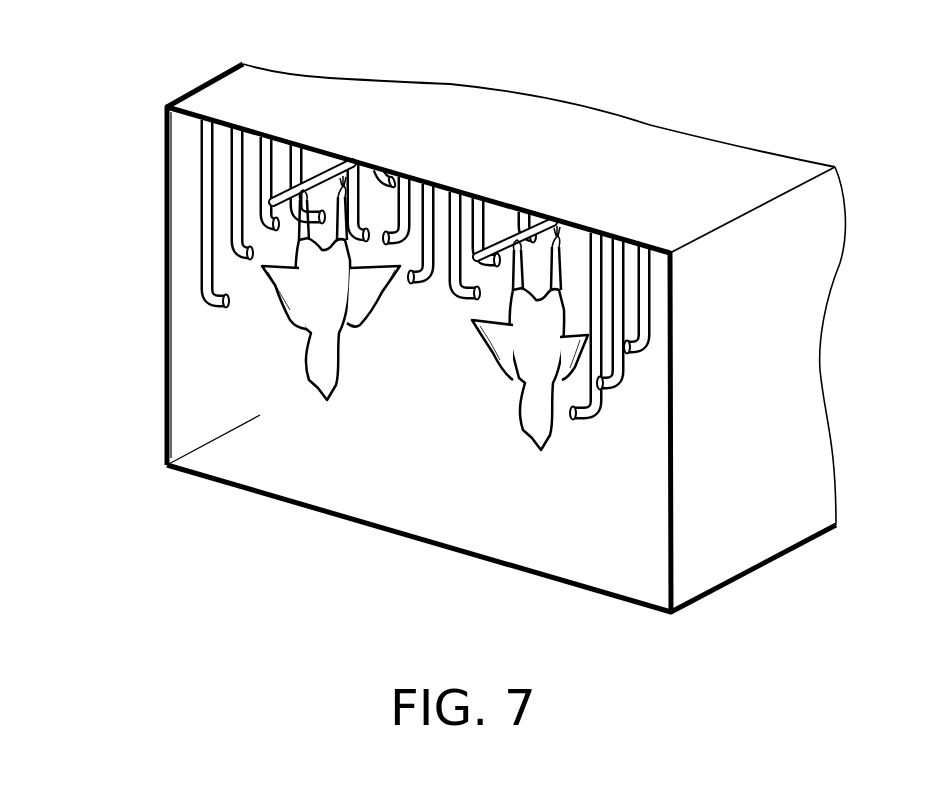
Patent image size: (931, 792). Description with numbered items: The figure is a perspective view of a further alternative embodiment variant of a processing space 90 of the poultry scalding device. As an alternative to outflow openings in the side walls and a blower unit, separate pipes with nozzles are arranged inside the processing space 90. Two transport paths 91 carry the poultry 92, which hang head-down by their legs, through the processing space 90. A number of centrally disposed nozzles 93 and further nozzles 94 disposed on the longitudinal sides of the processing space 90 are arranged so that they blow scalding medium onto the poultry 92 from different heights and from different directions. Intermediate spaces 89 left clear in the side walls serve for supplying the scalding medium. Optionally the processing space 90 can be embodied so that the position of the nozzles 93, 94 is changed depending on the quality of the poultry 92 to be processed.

The intermediate spaces 89 is at (212, 452).
The processing space 90 is at (109, 126).
The transport paths 91 is at (306, 180).
The poultry 92 is at (308, 370).
The centrally disposed nozzles 93 is at (413, 280).
The nozzles disposed on the longitudinal sides 94 is at (246, 254).